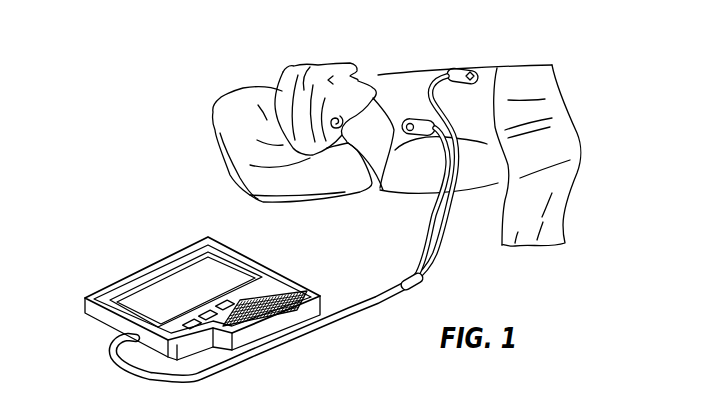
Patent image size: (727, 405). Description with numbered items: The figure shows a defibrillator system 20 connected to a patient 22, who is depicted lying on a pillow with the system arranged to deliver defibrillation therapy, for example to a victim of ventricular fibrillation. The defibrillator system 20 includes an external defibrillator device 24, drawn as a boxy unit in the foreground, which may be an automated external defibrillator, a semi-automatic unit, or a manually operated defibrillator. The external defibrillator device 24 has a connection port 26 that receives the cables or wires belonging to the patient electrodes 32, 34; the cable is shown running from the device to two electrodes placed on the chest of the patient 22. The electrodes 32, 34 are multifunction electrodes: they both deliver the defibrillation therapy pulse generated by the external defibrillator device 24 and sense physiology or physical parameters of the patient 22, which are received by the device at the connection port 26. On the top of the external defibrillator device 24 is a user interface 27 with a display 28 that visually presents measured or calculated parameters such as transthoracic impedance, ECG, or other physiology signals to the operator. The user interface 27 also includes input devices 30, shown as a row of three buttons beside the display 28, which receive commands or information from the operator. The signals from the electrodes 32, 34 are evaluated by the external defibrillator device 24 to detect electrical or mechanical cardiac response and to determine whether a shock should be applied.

The defibrillator system 20 is at (161, 43).
The patient 22 is at (398, 69).
The external defibrillator device 24 is at (202, 241).
The connection port 26 is at (110, 337).
The user interface 27 is at (187, 257).
The display 28 is at (156, 290).
The input devices 30 is at (208, 311).
The electrode 32 is at (470, 66).
The electrode 34 is at (389, 186).